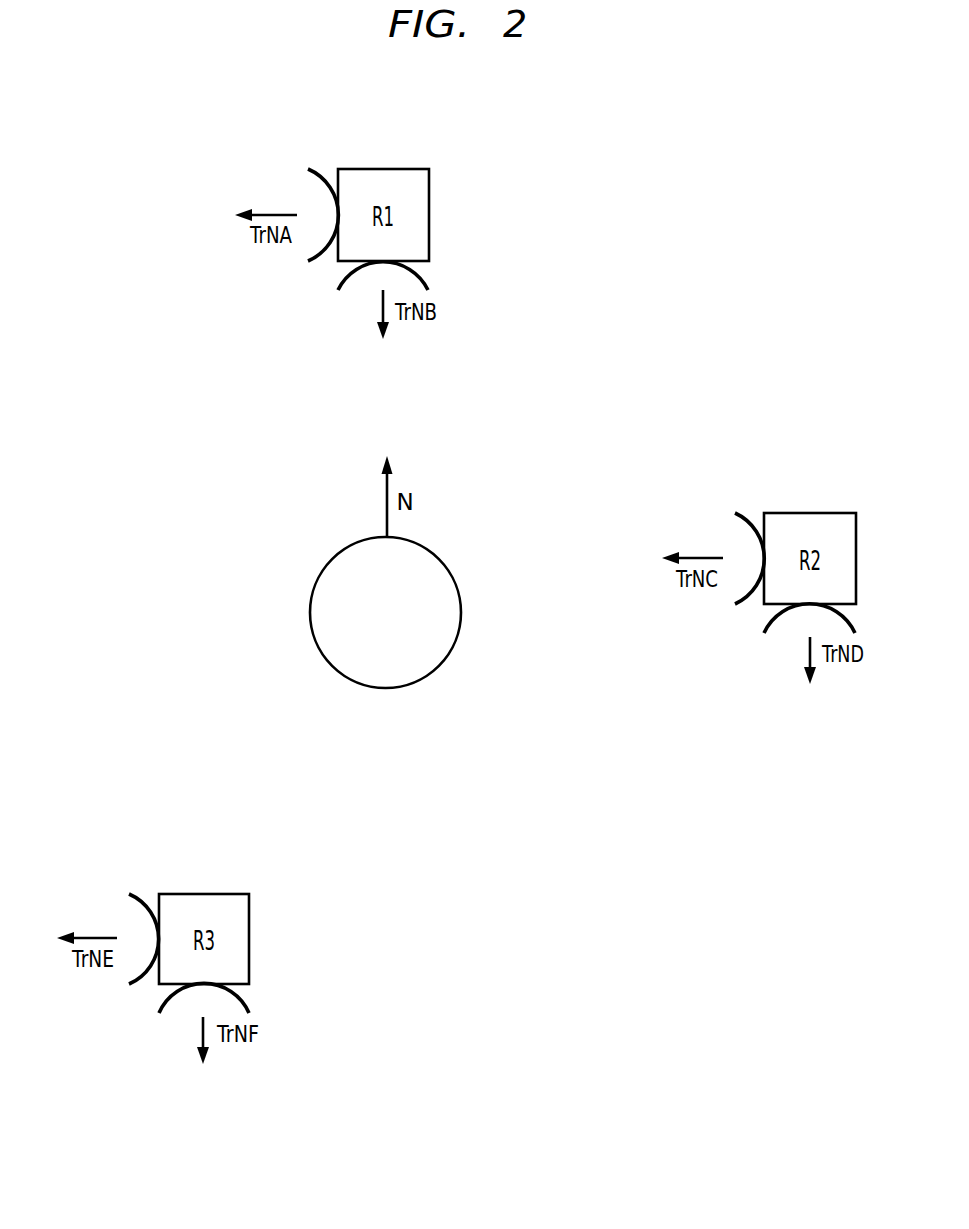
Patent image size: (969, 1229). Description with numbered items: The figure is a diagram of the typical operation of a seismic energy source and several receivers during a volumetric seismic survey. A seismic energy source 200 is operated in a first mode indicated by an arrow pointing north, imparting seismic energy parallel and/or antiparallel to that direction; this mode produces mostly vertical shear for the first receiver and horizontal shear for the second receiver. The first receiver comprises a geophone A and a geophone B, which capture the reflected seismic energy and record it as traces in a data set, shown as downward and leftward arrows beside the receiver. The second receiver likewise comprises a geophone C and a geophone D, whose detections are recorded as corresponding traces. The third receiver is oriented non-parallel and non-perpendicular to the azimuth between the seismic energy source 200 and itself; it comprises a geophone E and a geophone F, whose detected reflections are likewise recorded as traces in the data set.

The seismic energy source 200 is at (310, 610).
The geophone A is at (320, 177).
The geophone B is at (427, 284).
The geophone C is at (747, 518).
The geophone D is at (854, 625).
The geophone E is at (140, 899).
The geophone F is at (248, 1005).